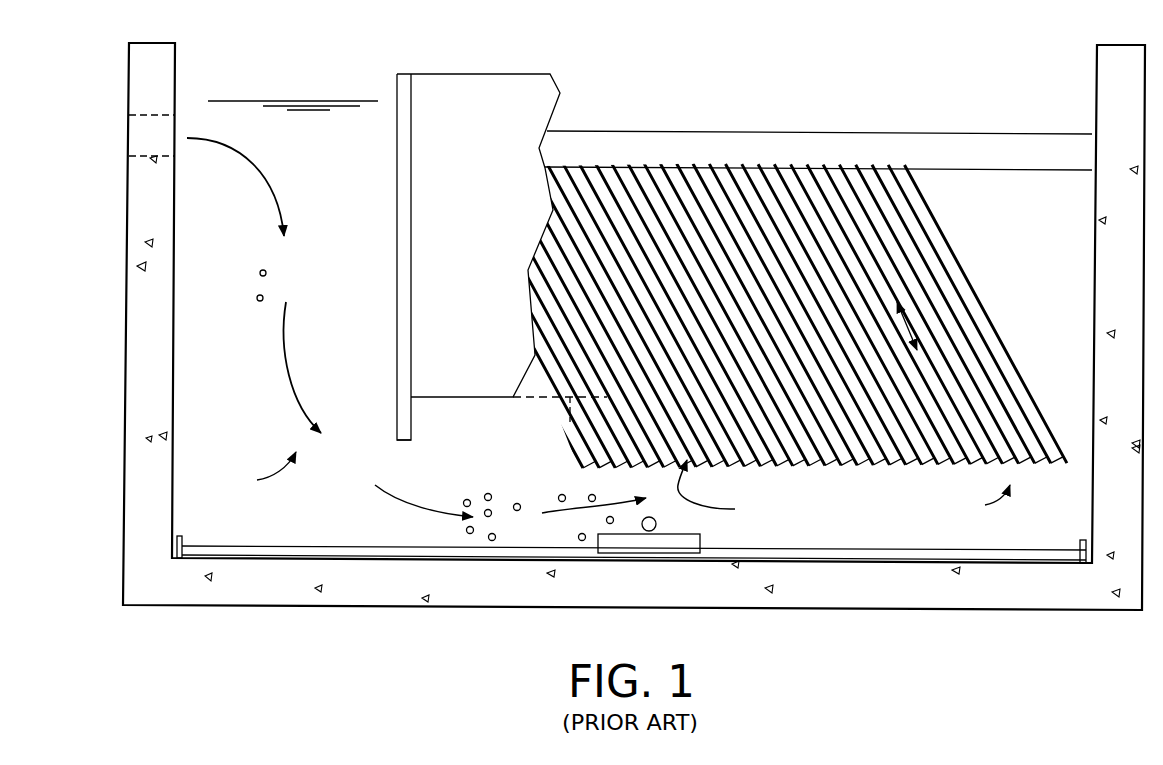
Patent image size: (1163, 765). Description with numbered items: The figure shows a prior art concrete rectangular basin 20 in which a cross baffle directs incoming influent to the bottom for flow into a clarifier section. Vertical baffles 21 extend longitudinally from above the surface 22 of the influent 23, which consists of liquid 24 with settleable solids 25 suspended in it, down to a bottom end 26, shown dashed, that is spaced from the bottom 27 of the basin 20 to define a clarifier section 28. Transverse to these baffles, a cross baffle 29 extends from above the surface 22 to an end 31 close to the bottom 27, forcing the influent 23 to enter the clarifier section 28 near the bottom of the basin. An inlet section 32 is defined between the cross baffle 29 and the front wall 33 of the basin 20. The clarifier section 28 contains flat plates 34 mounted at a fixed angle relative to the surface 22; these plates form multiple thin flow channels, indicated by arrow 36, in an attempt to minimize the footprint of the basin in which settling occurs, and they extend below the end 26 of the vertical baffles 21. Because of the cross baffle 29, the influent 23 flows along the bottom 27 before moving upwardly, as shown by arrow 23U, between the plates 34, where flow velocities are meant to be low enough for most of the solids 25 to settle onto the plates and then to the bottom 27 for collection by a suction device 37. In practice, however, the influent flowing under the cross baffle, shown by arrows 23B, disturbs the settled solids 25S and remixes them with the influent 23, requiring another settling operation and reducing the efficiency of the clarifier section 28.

The basin 20 is at (184, 45).
The vertical baffle 21 is at (425, 398).
The surface 22 is at (243, 101).
The influent 23 is at (264, 172).
The arrows showing influent flow under cross baffle 23B is at (438, 506).
The arrow showing upward influent flow 23U is at (730, 491).
The liquid 24 is at (300, 110).
The settleable solids 25 is at (266, 271).
The settled solids 25S is at (516, 502).
The bottom end 26 is at (567, 423).
The bottom 27 is at (238, 555).
The clarifier section 28 is at (978, 503).
The cross baffle 29 is at (397, 300).
The end 31 is at (407, 443).
The inlet section 32 is at (259, 472).
The front wall 33 is at (177, 272).
The flat plates 34 is at (920, 228).
The arrow showing flow channel 36 is at (912, 330).
The suction device 37 is at (651, 539).